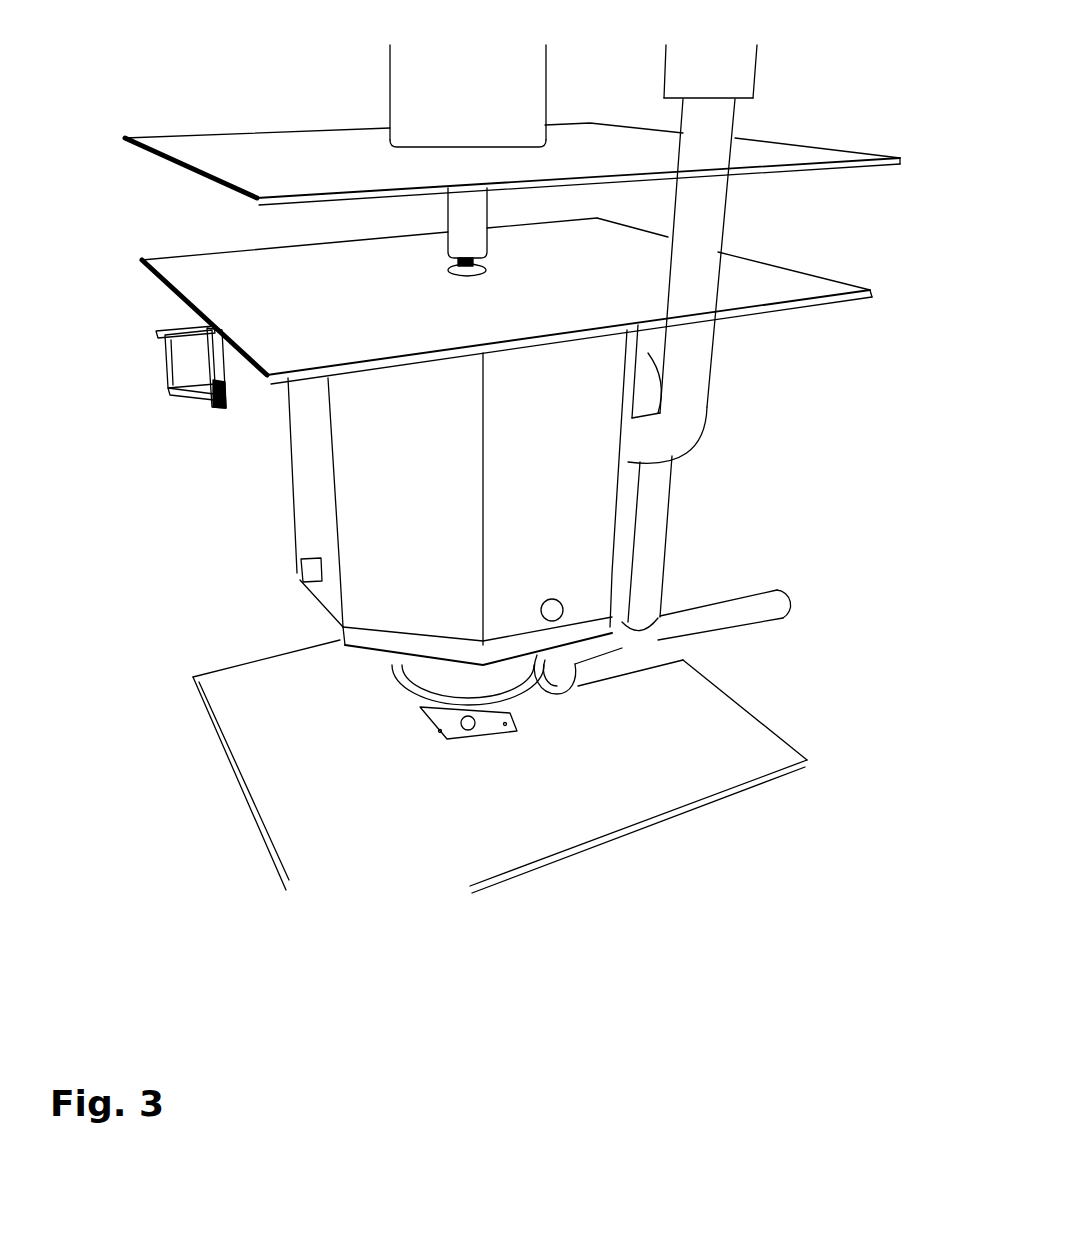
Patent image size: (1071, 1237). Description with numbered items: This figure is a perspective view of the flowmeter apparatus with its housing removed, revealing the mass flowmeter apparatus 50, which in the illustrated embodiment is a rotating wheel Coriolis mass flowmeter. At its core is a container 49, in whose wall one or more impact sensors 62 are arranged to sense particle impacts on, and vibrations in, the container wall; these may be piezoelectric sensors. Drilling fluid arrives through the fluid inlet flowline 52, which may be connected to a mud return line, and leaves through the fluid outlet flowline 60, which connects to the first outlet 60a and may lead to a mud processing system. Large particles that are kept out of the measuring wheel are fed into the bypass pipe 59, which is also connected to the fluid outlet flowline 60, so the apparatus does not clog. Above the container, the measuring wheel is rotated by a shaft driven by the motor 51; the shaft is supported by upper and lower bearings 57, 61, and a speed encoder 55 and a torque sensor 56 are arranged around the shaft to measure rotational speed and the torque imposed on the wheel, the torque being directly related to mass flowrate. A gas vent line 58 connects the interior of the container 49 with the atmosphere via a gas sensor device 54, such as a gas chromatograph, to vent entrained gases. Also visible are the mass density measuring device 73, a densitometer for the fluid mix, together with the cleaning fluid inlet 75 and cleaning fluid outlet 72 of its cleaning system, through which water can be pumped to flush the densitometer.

The container 49 is at (380, 497).
The mass flowmeter apparatus 50 is at (563, 610).
The motor 51 is at (414, 96).
The fluid inlet flowline 52 is at (135, 358).
The gas sensor device 54 is at (782, 54).
The speed encoder 55 is at (512, 138).
The torque sensor 56 is at (320, 223).
The upper bearing 57 is at (300, 248).
The gas vent line 58 is at (761, 281).
The bypass pipe 59 is at (753, 531).
The fluid outlet flowline 60 is at (707, 640).
The outlet 60a is at (698, 739).
The lower bearing 61 is at (609, 825).
The impact sensor 62 is at (508, 577).
The cleaning fluid outlet 72 is at (126, 303).
The mass density measuring device 73 is at (183, 427).
The cleaning fluid inlet 75 is at (164, 432).